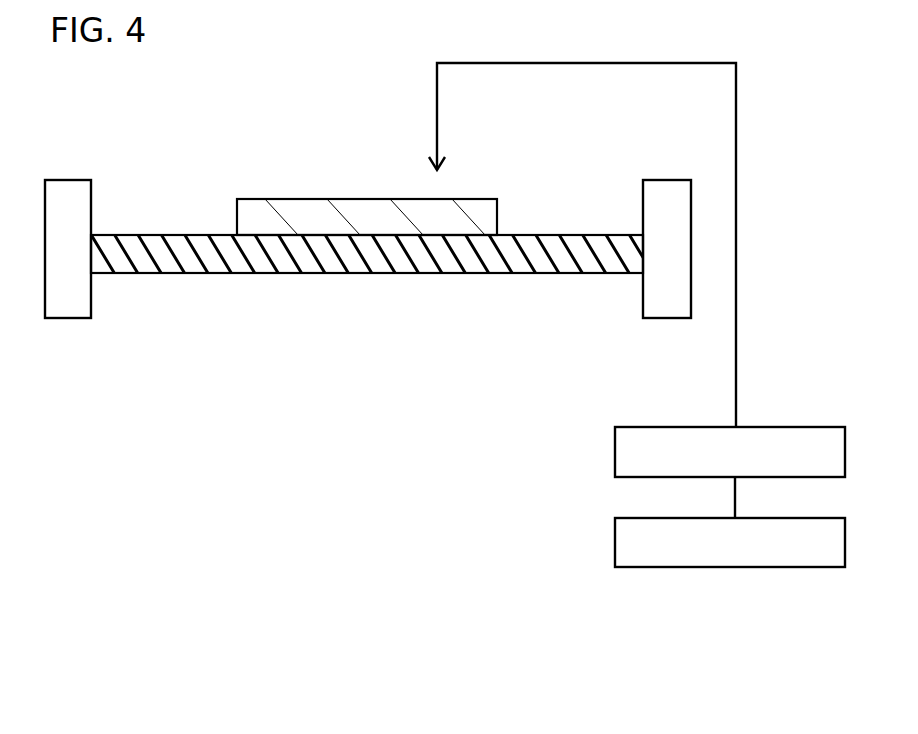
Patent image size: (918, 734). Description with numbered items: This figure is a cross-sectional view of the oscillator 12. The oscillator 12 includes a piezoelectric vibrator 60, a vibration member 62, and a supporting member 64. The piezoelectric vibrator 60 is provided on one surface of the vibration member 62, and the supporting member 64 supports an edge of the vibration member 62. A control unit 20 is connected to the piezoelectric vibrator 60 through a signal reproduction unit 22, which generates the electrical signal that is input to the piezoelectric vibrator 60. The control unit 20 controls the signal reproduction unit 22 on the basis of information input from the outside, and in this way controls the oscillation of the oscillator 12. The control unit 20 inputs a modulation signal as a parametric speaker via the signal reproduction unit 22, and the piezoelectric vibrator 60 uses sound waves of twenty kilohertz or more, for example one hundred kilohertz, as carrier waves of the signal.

The oscillator 12 is at (746, 655).
The control unit 20 is at (615, 539).
The signal reproduction unit 22 is at (615, 453).
The piezoelectric vibrator 60 is at (285, 210).
The vibration member 62 is at (183, 260).
The supporting member 64 is at (63, 200).